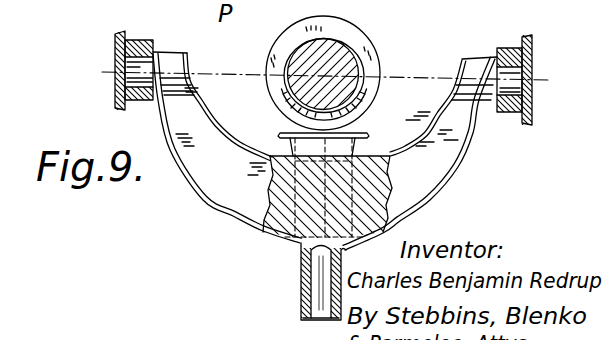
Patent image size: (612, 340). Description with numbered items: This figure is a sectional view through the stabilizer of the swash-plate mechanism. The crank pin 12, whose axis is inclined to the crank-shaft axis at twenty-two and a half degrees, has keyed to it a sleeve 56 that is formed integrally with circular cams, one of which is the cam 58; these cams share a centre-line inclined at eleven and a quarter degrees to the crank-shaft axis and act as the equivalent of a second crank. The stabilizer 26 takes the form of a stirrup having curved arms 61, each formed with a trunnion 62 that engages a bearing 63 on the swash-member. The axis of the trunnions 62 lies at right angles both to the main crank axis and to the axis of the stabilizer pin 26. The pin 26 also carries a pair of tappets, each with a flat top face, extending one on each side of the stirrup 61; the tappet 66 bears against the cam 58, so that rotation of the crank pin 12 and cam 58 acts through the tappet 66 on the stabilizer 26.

The crank pin 12 is at (306, 62).
The stabilizer pin 26 is at (290, 241).
The sleeve 56 is at (363, 71).
The circular cam 58 is at (356, 37).
The curved arm of the stirrup 61 is at (452, 163).
The trunnion 62 is at (130, 68).
The bearing 63 is at (133, 101).
The tappet 66 is at (340, 145).